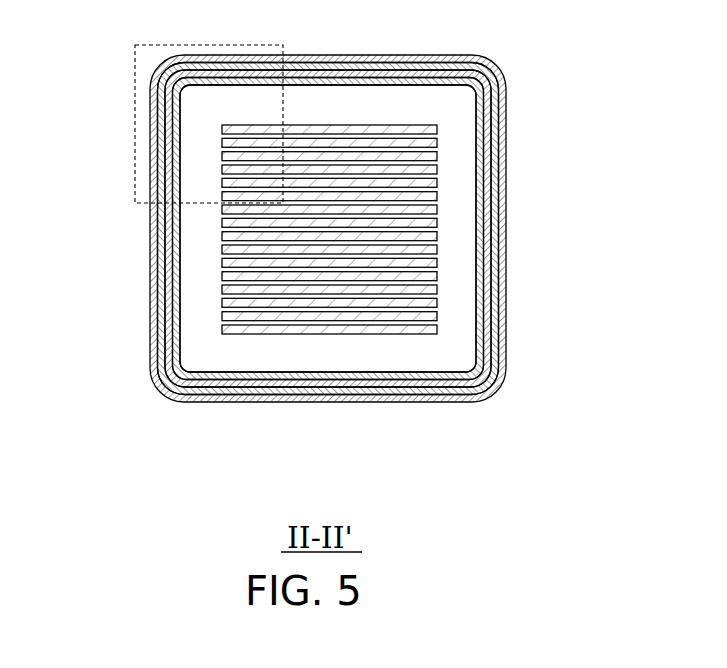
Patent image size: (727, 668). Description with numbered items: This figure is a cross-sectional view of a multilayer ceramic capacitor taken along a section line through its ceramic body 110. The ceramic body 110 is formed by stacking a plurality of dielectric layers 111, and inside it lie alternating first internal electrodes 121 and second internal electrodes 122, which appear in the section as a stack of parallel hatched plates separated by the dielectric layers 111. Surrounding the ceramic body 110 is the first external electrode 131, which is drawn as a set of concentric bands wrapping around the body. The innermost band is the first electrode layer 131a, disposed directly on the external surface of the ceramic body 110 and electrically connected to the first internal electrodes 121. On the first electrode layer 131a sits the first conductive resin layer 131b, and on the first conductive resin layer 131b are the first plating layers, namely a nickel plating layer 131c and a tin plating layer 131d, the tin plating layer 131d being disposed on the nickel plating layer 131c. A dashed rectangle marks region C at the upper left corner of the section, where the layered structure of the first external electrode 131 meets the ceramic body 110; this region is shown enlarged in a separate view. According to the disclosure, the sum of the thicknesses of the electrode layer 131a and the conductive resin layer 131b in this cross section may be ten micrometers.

The ceramic body 110 is at (323, 268).
The dielectric layer 111 is at (437, 135).
The first internal electrode 121 is at (437, 128).
The second internal electrode 122 is at (437, 142).
The first external electrode 131 is at (301, 288).
The first electrode layer 131a is at (152, 338).
The first conductive resin layer 131b is at (178, 399).
The nickel plating layer 131c is at (243, 392).
The tin plating layer 131d is at (328, 277).
The region C is at (133, 122).